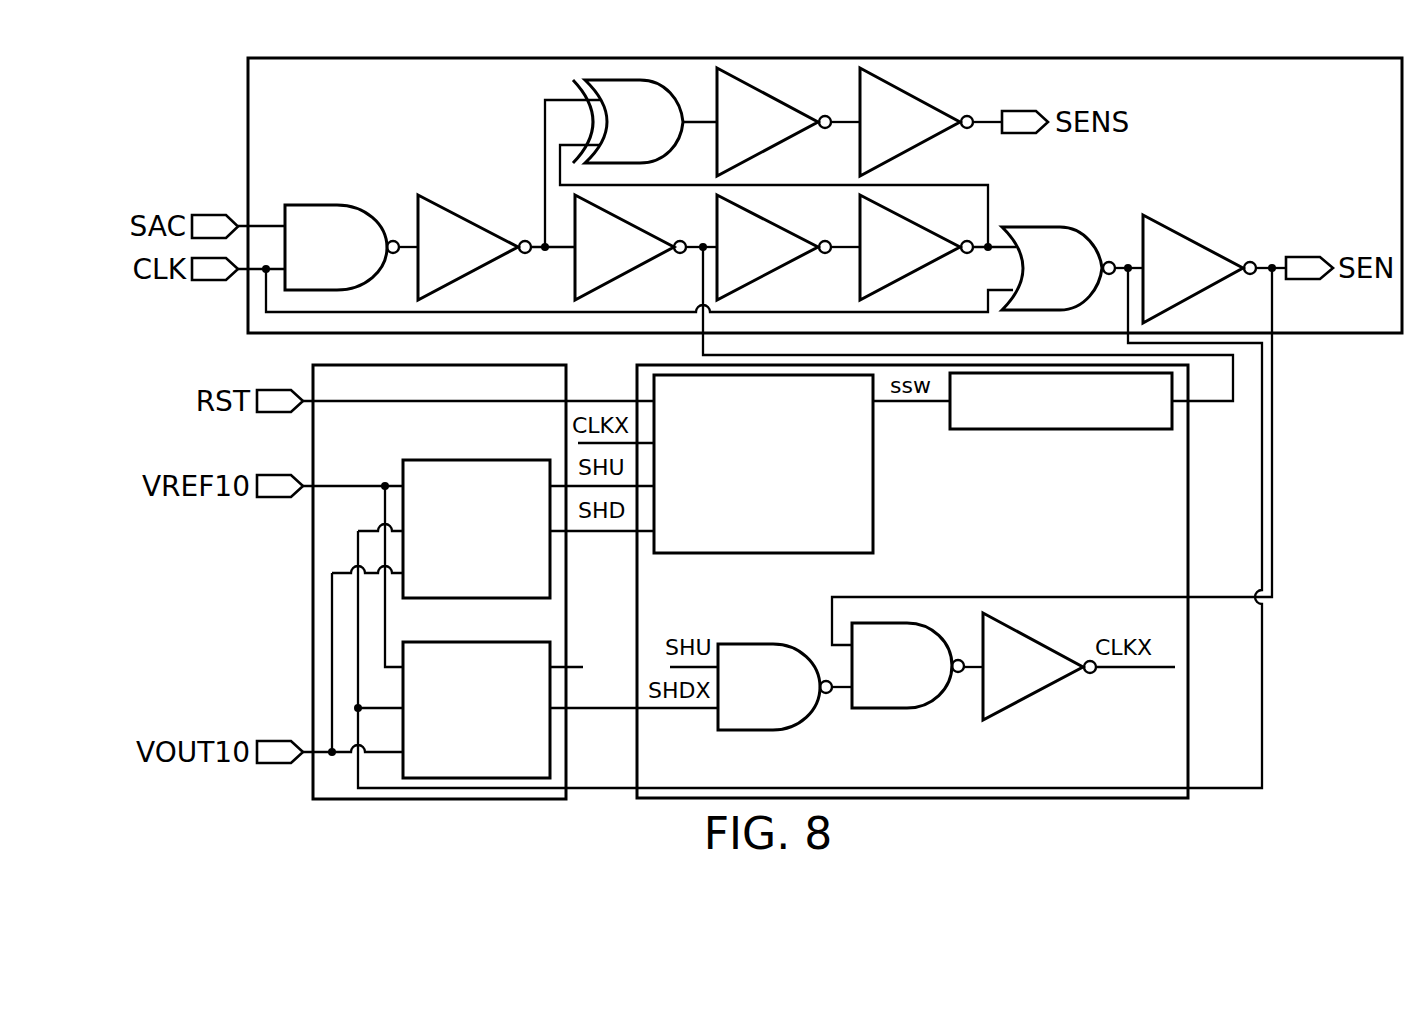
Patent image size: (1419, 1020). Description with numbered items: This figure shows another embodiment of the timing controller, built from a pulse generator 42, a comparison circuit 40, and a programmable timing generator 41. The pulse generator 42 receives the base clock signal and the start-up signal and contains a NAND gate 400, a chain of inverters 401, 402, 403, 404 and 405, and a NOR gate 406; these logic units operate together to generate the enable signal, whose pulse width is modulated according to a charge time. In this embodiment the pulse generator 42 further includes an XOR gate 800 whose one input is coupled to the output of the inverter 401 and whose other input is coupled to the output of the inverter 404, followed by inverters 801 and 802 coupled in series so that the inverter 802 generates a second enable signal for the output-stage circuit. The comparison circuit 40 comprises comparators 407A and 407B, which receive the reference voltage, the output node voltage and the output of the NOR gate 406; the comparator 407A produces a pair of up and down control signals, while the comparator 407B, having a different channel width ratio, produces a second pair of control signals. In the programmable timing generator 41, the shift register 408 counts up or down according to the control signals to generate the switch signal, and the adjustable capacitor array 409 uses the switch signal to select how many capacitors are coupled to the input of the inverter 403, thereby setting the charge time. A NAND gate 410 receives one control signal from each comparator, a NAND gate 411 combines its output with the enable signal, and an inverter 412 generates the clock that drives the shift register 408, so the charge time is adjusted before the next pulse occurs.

The pulse generator 42 is at (248, 100).
The comparison circuit 40 is at (313, 583).
The programmable timing generator 41 is at (1188, 485).
The NAND gate 400 is at (307, 263).
The inverter 401 is at (428, 263).
The inverter 402 is at (584, 263).
The inverter 403 is at (727, 263).
The inverter 404 is at (870, 263).
The inverter 405 is at (1153, 284).
The NOR gate 406 is at (1037, 284).
The comparator 407A is at (404, 458).
The comparator 407B is at (404, 640).
The shift register 408 is at (655, 555).
The adjustable capacitor array 409 is at (951, 431).
The NAND gate 410 is at (787, 703).
The NAND gate 411 is at (920, 683).
The inverter 412 is at (993, 683).
The XOR gate 800 is at (667, 138).
The inverter 801 is at (727, 138).
The inverter 802 is at (870, 138).